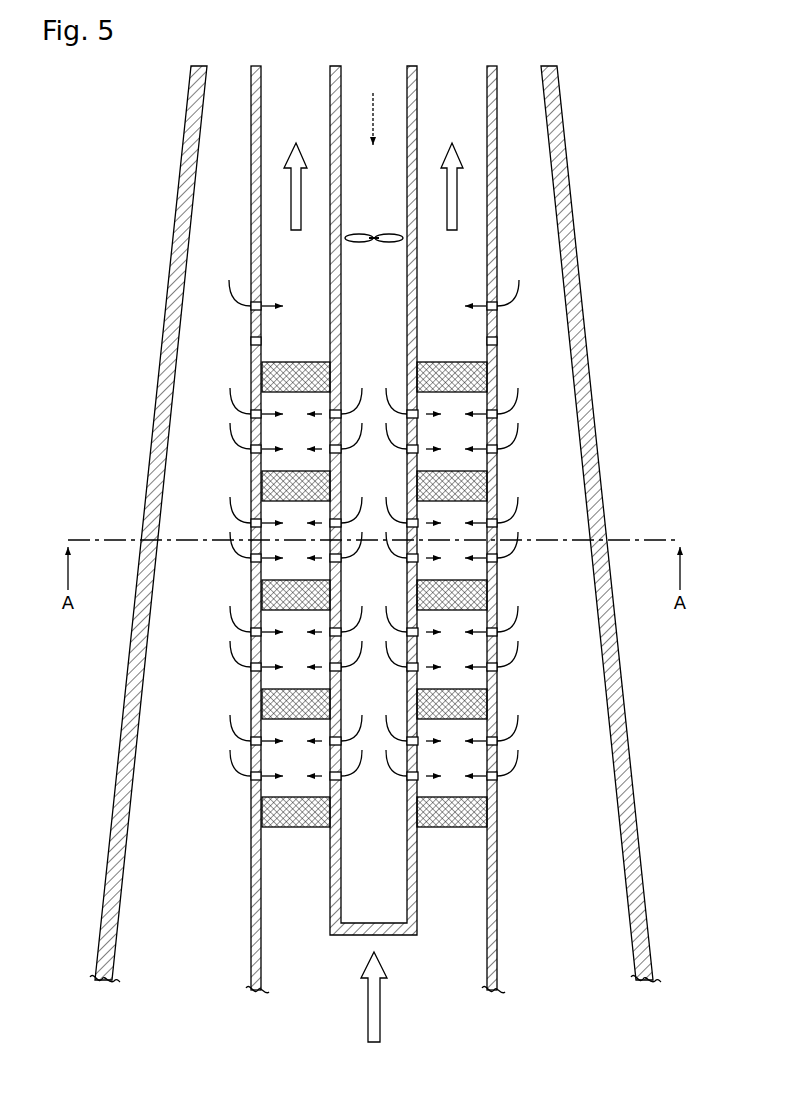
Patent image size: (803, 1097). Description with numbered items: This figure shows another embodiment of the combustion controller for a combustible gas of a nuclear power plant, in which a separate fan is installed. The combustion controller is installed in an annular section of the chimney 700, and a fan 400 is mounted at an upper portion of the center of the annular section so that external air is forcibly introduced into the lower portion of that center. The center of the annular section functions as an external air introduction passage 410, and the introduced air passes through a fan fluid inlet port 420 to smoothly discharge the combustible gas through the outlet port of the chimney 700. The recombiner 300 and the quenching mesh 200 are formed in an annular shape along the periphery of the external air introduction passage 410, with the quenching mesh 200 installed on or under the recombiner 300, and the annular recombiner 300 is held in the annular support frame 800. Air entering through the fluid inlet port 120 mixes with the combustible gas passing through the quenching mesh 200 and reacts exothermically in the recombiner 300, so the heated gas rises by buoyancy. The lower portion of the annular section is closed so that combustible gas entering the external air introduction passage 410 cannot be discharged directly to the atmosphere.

The chimney 700 is at (578, 123).
The support frame 800 is at (497, 183).
The fan 400 is at (404, 240).
The external air introduction passage 410 is at (449, 500).
The fan fluid inlet port 420 is at (400, 448).
The recombiner 300 is at (497, 600).
The fluid inlet port 120 is at (497, 777).
The quenching mesh 200 is at (478, 529).